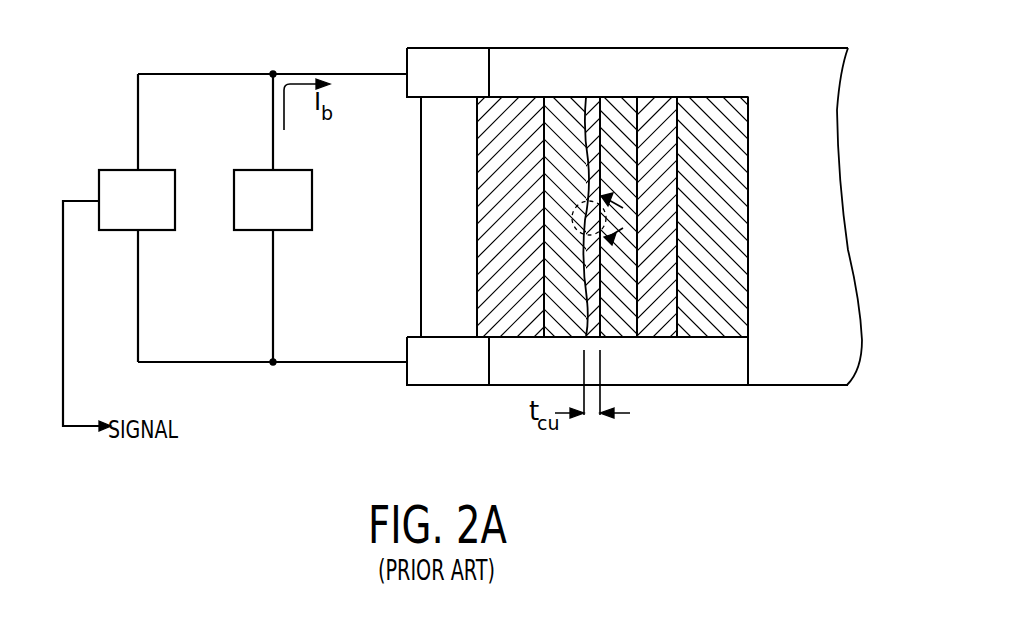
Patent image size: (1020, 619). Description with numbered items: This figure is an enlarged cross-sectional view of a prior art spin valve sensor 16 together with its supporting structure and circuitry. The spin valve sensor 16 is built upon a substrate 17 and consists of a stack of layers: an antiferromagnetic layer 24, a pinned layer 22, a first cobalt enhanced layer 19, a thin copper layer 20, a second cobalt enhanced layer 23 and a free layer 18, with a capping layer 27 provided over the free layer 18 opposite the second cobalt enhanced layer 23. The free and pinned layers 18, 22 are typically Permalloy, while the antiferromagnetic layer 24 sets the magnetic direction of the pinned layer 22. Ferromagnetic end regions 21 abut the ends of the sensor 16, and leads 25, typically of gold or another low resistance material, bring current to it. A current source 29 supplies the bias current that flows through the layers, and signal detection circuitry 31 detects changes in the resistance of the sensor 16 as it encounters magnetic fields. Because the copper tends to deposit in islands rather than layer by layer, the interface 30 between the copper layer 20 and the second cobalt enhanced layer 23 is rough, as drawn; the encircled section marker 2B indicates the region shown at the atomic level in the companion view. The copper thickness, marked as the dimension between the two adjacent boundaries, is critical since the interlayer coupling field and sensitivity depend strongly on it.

The spin valve sensor 16 is at (462, 170).
The substrate 17 is at (827, 117).
The free layer 18 is at (526, 116).
The first cobalt enhanced layer 19 is at (632, 118).
The copper layer 20 is at (592, 118).
The ferromagnetic end regions 21 is at (597, 63).
The pinned layer 22 is at (660, 322).
The second cobalt enhanced layer 23 is at (560, 118).
The antiferromagnetic layer 24 is at (700, 118).
The leads 25 is at (447, 58).
The capping layer 27 is at (440, 262).
The current source 29 is at (252, 220).
The interface 30 is at (600, 330).
The signal detection circuitry 31 is at (122, 220).
The section line 2B is at (613, 219).